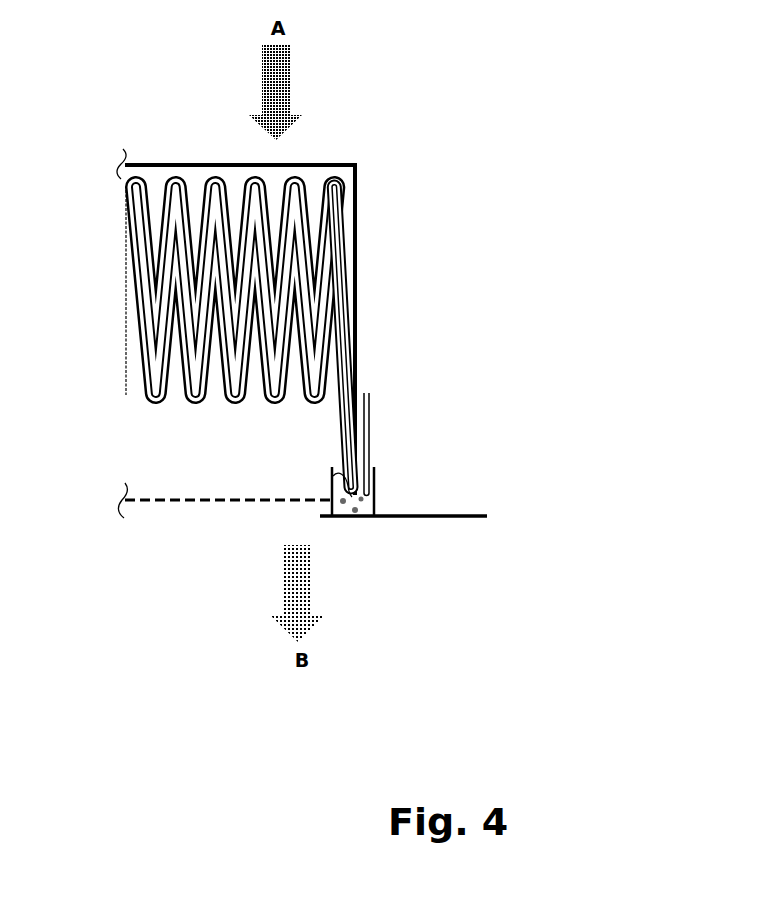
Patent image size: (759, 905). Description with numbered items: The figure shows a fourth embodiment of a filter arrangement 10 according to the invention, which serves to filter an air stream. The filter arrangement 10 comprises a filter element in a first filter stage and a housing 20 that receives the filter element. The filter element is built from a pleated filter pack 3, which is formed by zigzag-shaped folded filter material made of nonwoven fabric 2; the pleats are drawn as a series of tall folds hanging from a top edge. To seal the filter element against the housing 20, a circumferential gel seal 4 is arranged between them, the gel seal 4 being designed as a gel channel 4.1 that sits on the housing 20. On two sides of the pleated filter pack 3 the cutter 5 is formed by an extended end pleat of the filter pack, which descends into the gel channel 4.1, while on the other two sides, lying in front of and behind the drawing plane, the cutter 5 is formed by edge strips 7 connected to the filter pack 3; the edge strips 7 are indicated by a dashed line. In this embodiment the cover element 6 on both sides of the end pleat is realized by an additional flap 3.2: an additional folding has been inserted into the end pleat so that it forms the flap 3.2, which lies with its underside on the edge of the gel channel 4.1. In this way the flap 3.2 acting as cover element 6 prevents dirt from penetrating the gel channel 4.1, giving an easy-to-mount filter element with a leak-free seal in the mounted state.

The filter arrangement 10 is at (600, 148).
The filter material 2 is at (324, 372).
The pleated filter pack 3 is at (351, 219).
The cutter 5 is at (492, 400).
The cover element 6 is at (492, 400).
The flap 3.2 is at (379, 412).
The gel seal 4 is at (290, 510).
The gel channel 4.1 is at (376, 500).
The housing 20 is at (487, 517).
The edge strips 7 is at (151, 482).